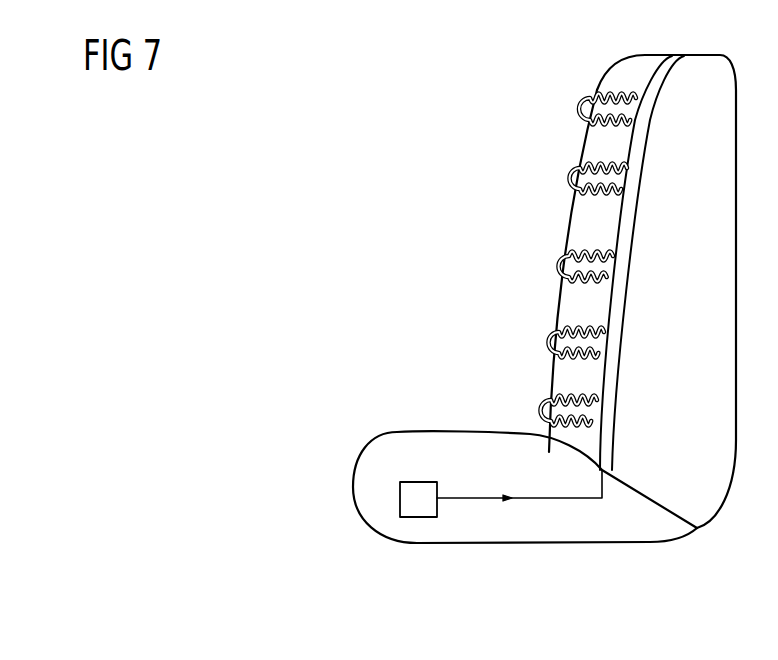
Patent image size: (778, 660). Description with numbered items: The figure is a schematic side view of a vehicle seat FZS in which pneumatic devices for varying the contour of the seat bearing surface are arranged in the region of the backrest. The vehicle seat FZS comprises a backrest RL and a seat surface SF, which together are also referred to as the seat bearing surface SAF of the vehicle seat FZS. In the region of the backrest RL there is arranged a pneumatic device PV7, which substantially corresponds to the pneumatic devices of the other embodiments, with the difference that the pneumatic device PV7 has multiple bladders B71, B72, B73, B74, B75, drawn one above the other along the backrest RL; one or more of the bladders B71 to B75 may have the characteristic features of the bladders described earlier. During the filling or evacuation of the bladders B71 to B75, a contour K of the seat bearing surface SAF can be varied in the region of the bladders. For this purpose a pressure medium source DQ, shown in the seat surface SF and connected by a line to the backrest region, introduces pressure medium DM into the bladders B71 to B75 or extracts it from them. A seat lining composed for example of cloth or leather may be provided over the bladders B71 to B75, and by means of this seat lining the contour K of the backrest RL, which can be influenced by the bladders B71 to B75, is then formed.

The vehicle seat FZS is at (320, 185).
The backrest RL is at (510, 290).
The pneumatic device PV7 is at (644, 159).
The contour K is at (578, 120).
The seat surface SF is at (338, 420).
The seat bearing surface SAF is at (563, 212).
The pressure medium source DQ is at (400, 500).
The pressure medium DM is at (467, 498).
The bladder B71 is at (593, 107).
The bladder B72 is at (580, 177).
The bladder B73 is at (565, 266).
The bladder B74 is at (560, 342).
The bladder B75 is at (553, 410).